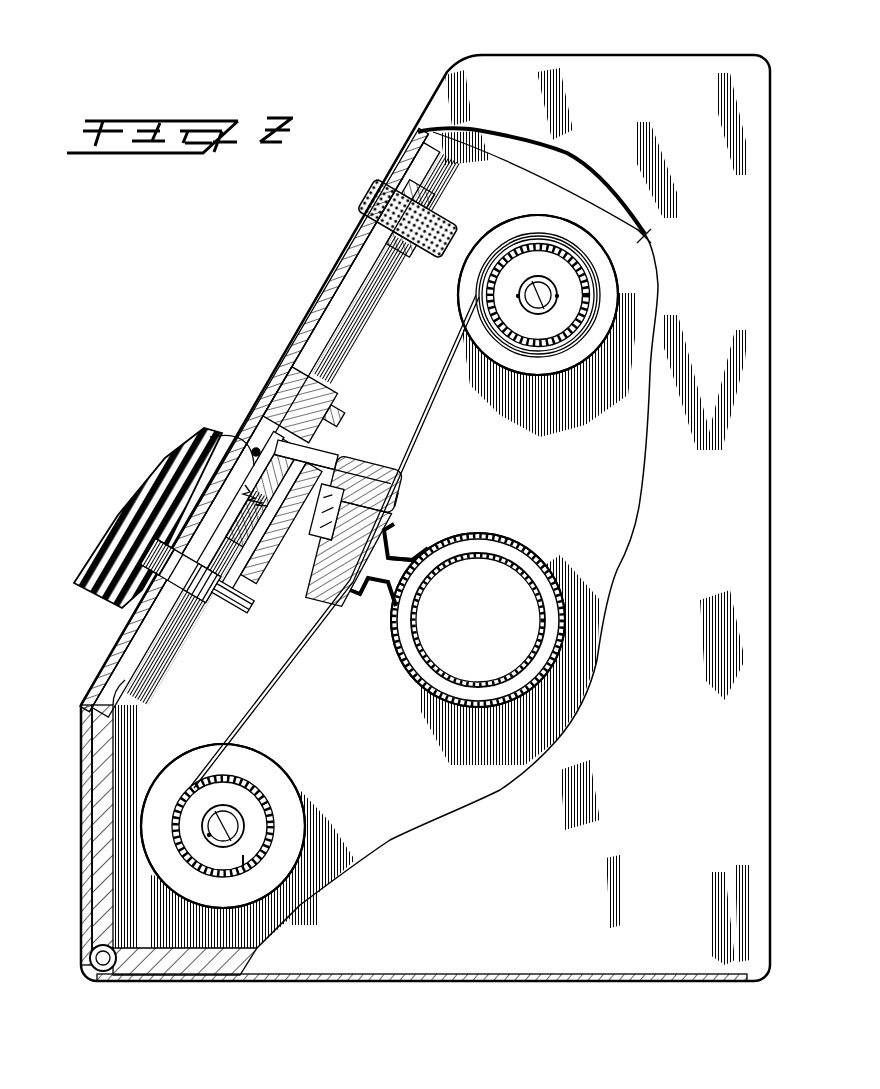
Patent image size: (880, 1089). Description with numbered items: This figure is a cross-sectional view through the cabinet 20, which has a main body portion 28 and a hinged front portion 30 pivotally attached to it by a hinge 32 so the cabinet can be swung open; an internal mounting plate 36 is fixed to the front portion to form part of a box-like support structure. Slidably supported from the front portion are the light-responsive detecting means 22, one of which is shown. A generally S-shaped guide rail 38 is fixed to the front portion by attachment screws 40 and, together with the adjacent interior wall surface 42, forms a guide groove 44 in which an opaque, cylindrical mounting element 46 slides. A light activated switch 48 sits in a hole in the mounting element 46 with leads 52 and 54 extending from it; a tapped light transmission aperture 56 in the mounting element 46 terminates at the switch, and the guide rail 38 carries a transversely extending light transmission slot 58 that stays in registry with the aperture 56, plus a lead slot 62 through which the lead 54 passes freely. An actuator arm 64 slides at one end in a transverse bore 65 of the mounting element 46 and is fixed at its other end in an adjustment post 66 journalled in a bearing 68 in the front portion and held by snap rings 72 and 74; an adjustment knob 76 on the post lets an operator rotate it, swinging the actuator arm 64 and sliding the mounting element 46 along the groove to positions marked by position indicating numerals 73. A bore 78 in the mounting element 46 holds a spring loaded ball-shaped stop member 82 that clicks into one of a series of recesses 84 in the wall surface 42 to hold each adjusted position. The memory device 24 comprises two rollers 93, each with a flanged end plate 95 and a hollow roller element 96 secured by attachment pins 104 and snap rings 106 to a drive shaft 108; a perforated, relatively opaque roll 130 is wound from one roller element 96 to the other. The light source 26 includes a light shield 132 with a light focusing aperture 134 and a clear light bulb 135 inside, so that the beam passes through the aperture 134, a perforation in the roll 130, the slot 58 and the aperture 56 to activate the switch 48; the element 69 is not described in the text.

The cabinet 20 is at (426, 98).
The light-responsive detecting means 22 is at (411, 505).
The memory device 24 is at (405, 426).
The light source 26 is at (408, 686).
The main body portion 28 is at (607, 55).
The hinged front portion 30 is at (320, 306).
The hinge 32 is at (94, 960).
The internal mounting plate 36 is at (548, 188).
The guide rail 38 is at (325, 383).
The attachment screws 40 is at (341, 411).
The interior wall surface 42 is at (220, 436).
The guide groove 44 is at (315, 450).
The mounting element 46 is at (246, 550).
The light activated switch 48 is at (302, 566).
The lead 52 is at (300, 594).
The lead 54 is at (364, 468).
The light transmission aperture 56 is at (380, 560).
The light transmission slot 58 is at (366, 586).
The lead slot 62 is at (404, 478).
The actuator arm 64 is at (252, 552).
The transverse bore 65 is at (348, 468).
The adjustment post 66 is at (241, 612).
The bearing 68 is at (146, 602).
The clamp bar 69 is at (390, 186).
The snap ring 72 is at (197, 606).
The position indicating numerals 73 is at (280, 392).
The snap ring 74 is at (128, 582).
The adjustment knob 76 is at (114, 515).
The bore 78 is at (263, 493).
The ball-shaped stop member 82 is at (252, 447).
The recesses 84 is at (258, 440).
The roller 93 is at (576, 218).
The flanged end plate 95 is at (459, 306).
The roller element 96 is at (528, 247).
The attachment pin 104 is at (535, 308).
The snap ring 106 is at (531, 280).
The drive shaft 108 is at (519, 295).
The roll 130 is at (601, 287).
The light shield 132 is at (561, 575).
The light focusing aperture 134 is at (393, 552).
The light bulb 135 is at (512, 548).